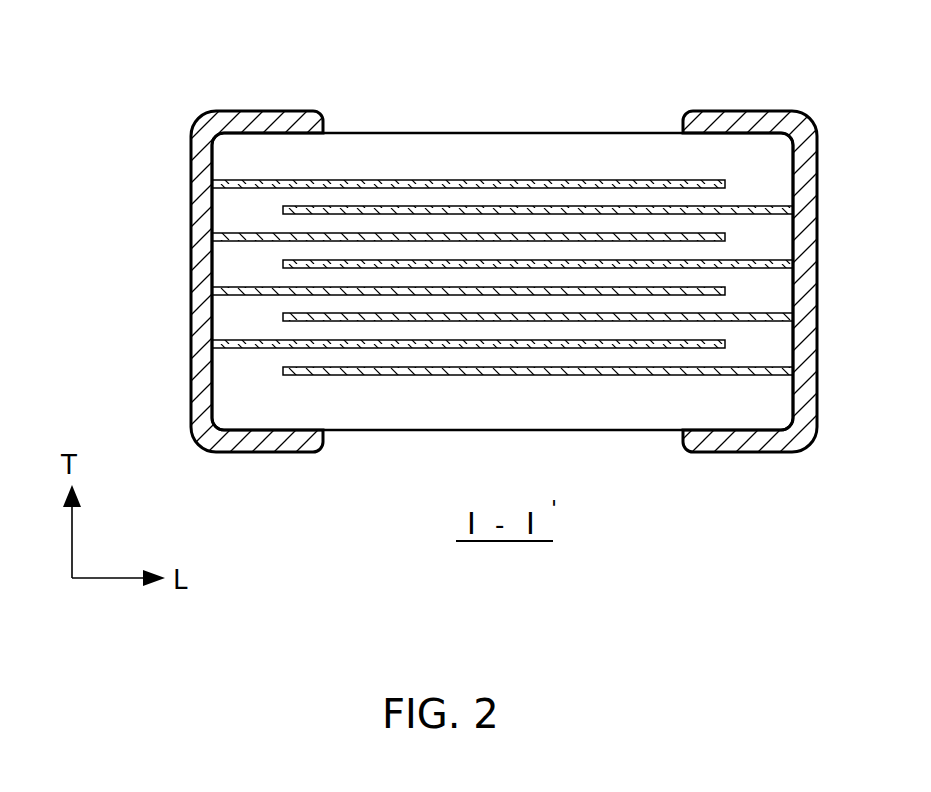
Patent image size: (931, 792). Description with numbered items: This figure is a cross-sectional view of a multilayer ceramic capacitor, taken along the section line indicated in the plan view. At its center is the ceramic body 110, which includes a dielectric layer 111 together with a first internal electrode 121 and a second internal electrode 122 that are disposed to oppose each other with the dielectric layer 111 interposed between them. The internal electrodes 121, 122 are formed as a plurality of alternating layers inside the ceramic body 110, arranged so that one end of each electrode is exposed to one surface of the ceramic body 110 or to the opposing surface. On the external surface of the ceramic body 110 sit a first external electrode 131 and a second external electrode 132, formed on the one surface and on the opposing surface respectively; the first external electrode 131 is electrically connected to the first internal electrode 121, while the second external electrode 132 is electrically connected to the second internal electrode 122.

The ceramic body 110 is at (510, 133).
The dielectric layer 111 is at (222, 198).
The first internal electrode 121 is at (263, 180).
The second internal electrode 122 is at (285, 212).
The first external electrode 131 is at (260, 111).
The second external electrode 132 is at (750, 111).